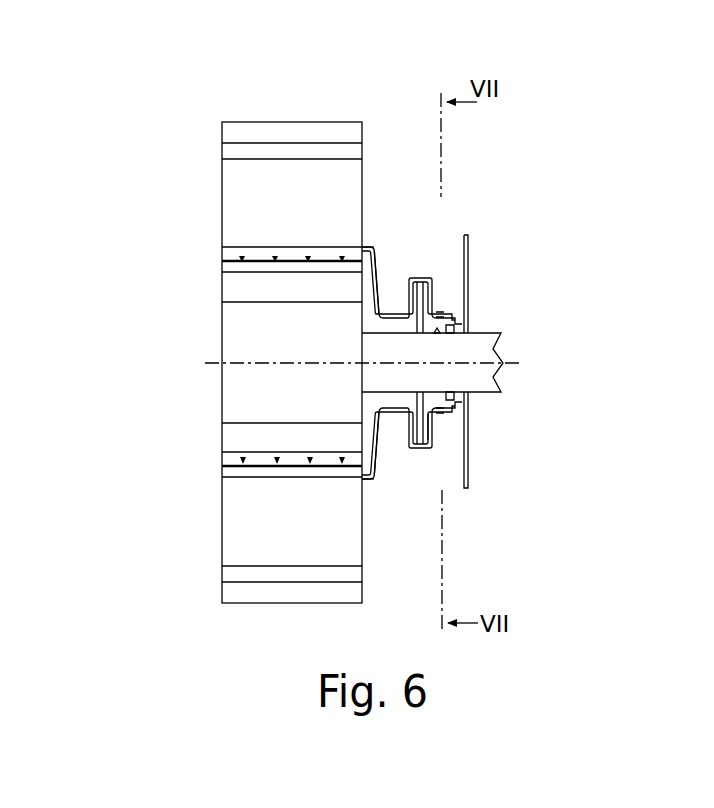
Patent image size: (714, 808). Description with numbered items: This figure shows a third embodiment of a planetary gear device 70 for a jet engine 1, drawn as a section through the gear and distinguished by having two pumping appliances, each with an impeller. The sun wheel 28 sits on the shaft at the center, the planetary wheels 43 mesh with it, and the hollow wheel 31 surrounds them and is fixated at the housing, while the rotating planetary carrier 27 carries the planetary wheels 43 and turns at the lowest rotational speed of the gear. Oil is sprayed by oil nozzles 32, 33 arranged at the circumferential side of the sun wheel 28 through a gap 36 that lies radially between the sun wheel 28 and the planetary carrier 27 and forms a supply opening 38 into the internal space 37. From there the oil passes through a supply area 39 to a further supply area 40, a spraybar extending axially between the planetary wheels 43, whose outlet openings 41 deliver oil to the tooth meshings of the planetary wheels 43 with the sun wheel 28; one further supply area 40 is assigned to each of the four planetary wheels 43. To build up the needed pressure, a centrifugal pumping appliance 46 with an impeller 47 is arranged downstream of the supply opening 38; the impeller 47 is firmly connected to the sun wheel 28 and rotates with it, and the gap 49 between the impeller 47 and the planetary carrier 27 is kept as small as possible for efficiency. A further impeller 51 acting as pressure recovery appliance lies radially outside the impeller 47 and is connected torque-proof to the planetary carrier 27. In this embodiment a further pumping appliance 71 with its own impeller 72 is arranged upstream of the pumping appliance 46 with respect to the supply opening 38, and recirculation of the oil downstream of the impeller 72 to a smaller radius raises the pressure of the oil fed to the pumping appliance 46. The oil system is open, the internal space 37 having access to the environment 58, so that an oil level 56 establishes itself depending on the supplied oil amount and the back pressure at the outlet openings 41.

The jet engine 1 is at (156, 127).
The planetary carrier 27 is at (373, 240).
The sun wheel 28 is at (262, 328).
The hollow wheel 31 is at (256, 135).
The oil nozzle 32 is at (468, 243).
The oil nozzle 33 is at (468, 462).
The gap 36 is at (466, 400).
The internal space 37 is at (412, 412).
The supply opening 38 is at (464, 323).
The supply area 39 is at (406, 318).
The further supply area 40 is at (232, 253).
The outlet openings 41 is at (307, 257).
The planetary wheels 43 is at (316, 170).
The centrifugal pumping appliance 46 is at (374, 465).
The impeller 47 is at (373, 292).
The gap 49 is at (380, 428).
The further impeller 51 is at (371, 492).
The oil level 56 is at (438, 313).
The environment 58 is at (578, 347).
The planetary gear device 70 is at (386, 136).
The further pumping appliance 71 is at (434, 432).
The impeller 72 is at (434, 420).